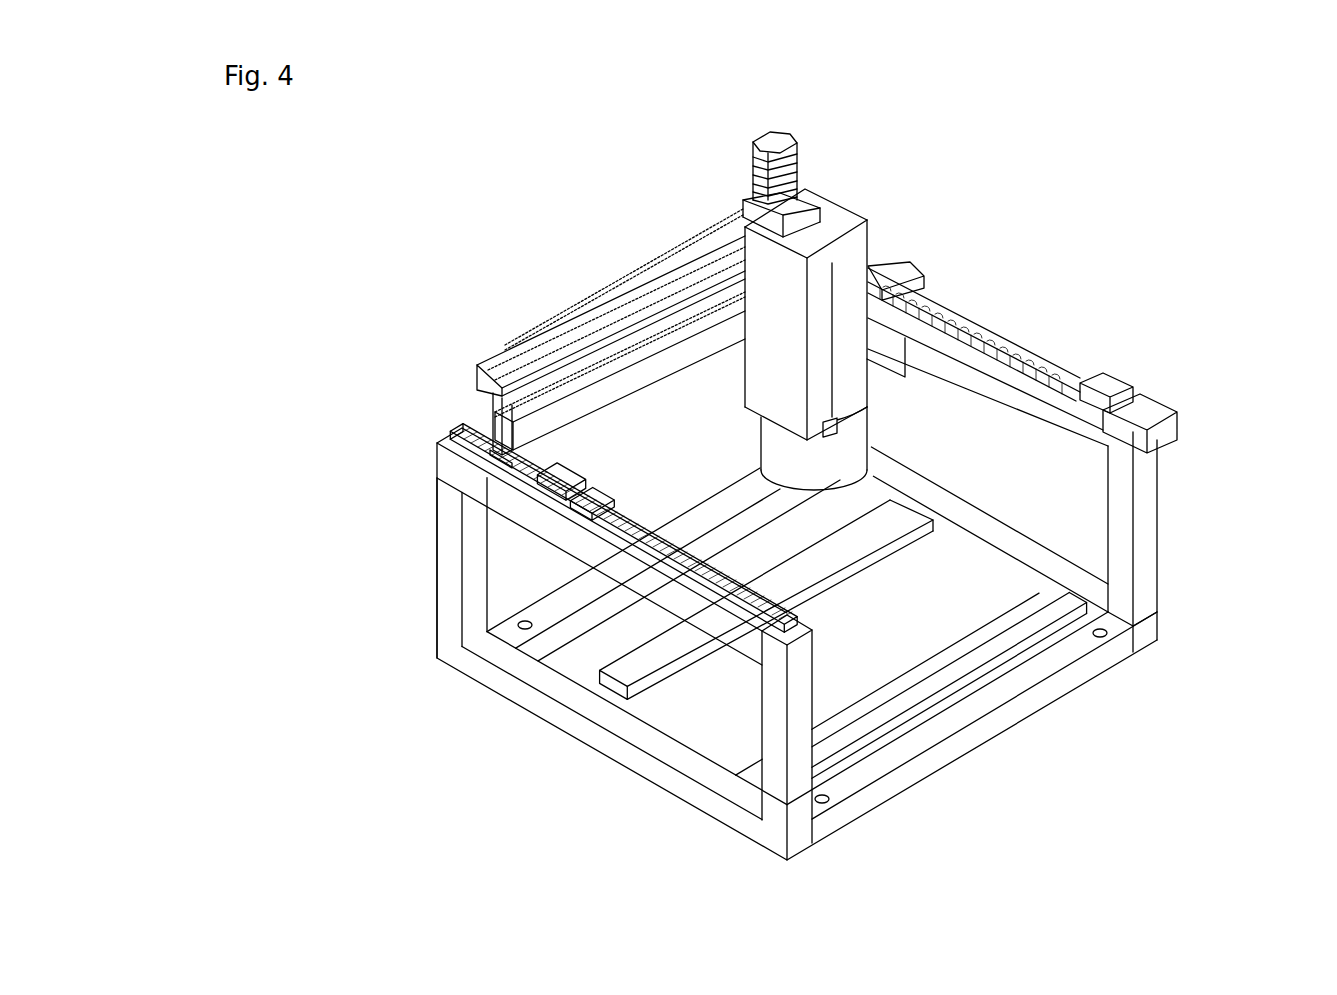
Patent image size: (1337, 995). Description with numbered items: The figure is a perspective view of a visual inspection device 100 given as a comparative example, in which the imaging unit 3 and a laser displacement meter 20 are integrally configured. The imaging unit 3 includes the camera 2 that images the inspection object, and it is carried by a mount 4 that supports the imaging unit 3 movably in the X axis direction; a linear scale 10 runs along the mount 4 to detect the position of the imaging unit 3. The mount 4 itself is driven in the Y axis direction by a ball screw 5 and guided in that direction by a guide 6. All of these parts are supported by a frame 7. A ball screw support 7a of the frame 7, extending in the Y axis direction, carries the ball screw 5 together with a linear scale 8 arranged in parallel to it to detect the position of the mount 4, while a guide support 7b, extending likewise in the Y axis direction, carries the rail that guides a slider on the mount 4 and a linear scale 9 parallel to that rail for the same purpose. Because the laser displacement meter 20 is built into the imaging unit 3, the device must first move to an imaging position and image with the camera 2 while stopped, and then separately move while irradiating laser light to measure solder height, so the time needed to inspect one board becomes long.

The visual inspection device 100 is at (928, 147).
The camera 2 is at (846, 460).
The imaging unit 3 is at (855, 263).
The mount 4 is at (717, 337).
The ball screw 5 is at (1048, 350).
The guide 6 is at (765, 622).
The frame 7 is at (1140, 622).
The ball screw support 7a is at (1108, 447).
The guide support 7b is at (500, 502).
The linear scale 8 is at (1062, 392).
The linear scale 9 is at (817, 580).
The linear scale 10 is at (593, 367).
The laser displacement meter 20 is at (889, 383).